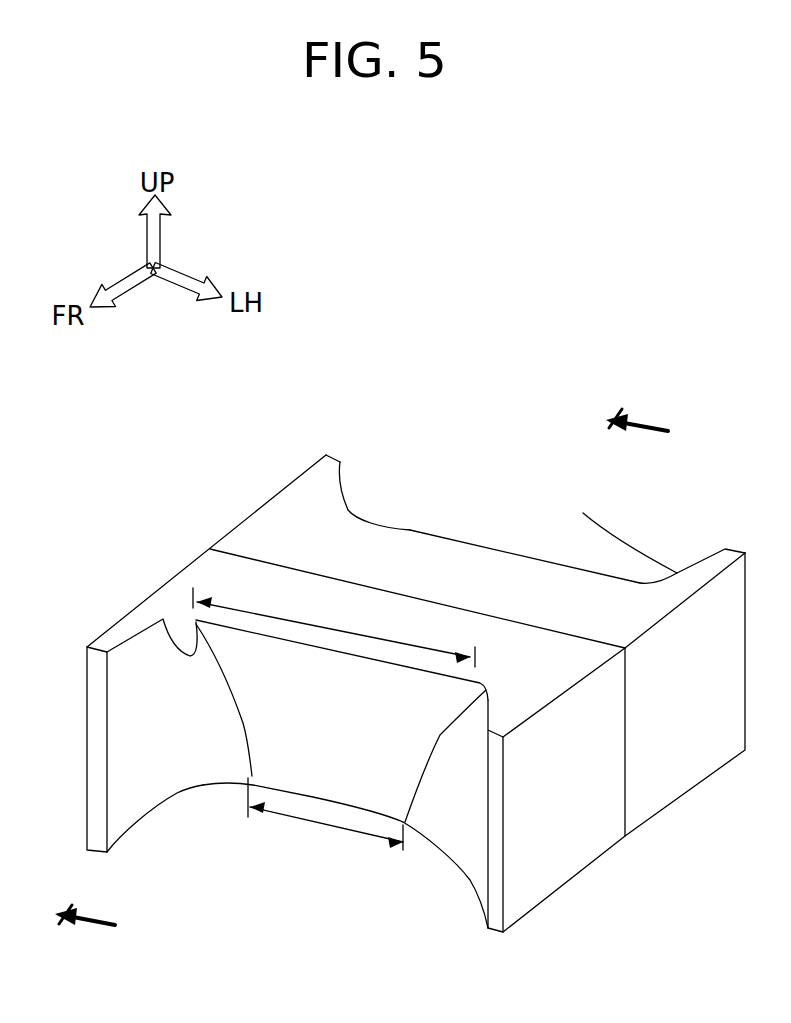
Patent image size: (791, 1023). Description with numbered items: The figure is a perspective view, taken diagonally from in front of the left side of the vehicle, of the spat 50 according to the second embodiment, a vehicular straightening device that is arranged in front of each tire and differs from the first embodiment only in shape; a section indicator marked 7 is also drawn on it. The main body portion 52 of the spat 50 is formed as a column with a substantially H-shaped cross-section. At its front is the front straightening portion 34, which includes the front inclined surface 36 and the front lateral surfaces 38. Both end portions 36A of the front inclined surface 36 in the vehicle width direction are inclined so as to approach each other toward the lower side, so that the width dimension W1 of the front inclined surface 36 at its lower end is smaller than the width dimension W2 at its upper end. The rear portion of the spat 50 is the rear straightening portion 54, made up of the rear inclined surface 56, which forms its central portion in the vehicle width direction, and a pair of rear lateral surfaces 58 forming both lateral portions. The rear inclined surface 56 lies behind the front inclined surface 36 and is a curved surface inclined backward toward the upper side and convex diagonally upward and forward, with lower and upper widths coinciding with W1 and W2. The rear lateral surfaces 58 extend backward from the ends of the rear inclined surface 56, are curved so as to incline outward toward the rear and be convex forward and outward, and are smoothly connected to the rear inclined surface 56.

The spat 50 is at (607, 369).
The main body portion 52 is at (287, 477).
The rear straightening portion 54 is at (609, 477).
The rear inclined surface 56 is at (453, 537).
The rear lateral surfaces 58 is at (343, 496).
The front inclined surface 36 is at (340, 780).
The end portions of the front inclined surface 36A is at (164, 618).
The front lateral surfaces 38 is at (157, 787).
The front straightening portion 34 is at (155, 897).
The width dimension at lower end W1 is at (290, 817).
The width dimension at upper end W2 is at (323, 632).
The section line 7- 7 is at (377, 681).